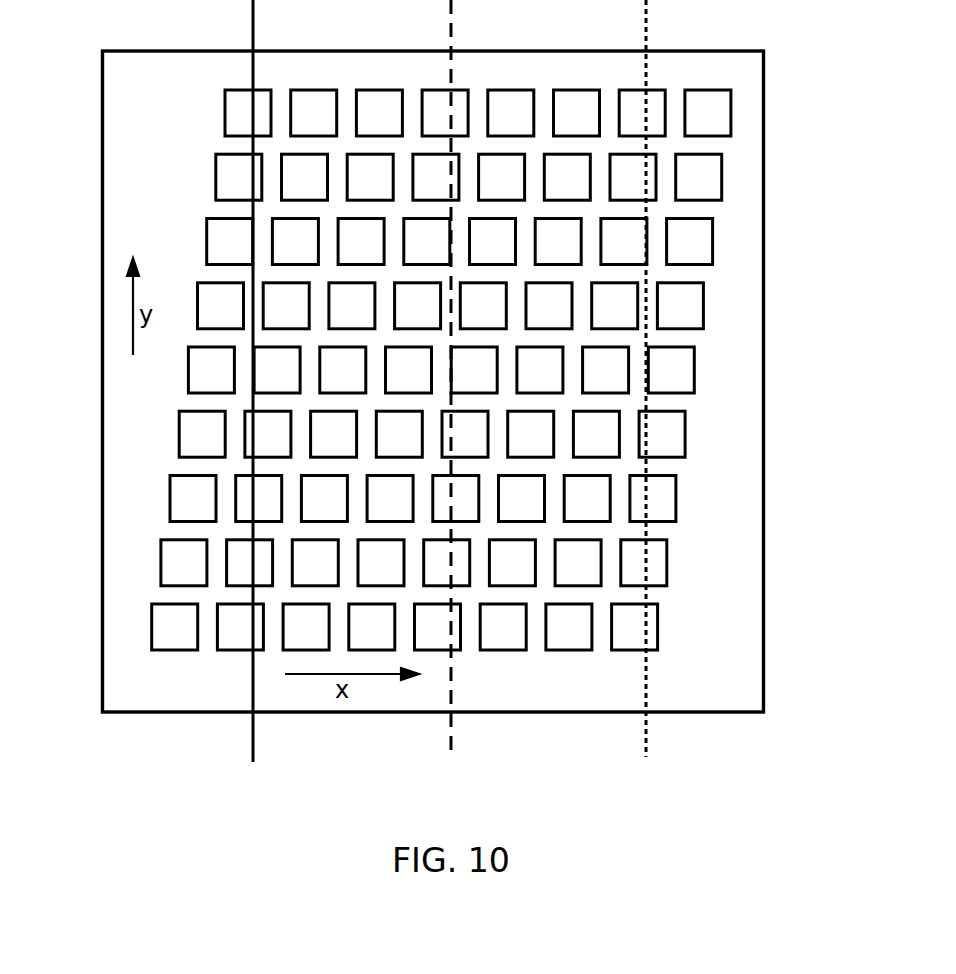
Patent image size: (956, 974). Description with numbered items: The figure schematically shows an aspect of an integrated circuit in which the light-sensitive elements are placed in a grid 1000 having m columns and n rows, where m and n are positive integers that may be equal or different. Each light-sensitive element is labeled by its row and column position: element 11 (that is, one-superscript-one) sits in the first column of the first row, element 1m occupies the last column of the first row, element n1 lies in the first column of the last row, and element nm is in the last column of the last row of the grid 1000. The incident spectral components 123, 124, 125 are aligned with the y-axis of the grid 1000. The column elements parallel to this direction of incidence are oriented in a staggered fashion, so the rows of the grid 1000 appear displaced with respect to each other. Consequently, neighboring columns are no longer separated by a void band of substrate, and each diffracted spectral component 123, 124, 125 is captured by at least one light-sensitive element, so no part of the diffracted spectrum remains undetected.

The grid 1000 is at (167, 698).
The light-sensitive element 1^1 11 is at (237, 118).
The light-sensitive element 1^m 1m is at (712, 113).
The light-sensitive element n^1 n1 is at (176, 627).
The light-sensitive element n^m nm is at (635, 628).
The incident spectral component 123 is at (253, 396).
The incident spectral component 124 is at (451, 396).
The incident spectral component 125 is at (646, 396).